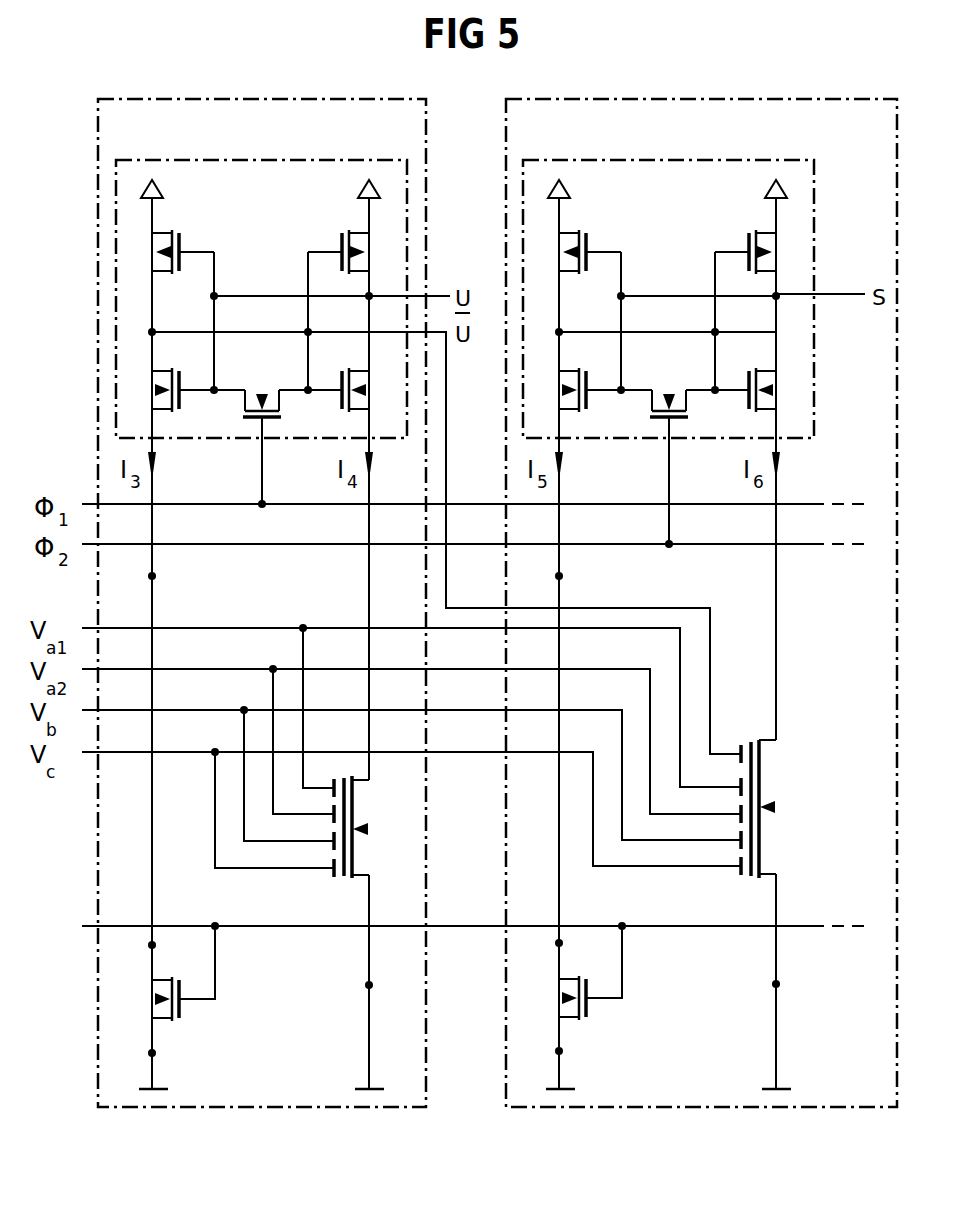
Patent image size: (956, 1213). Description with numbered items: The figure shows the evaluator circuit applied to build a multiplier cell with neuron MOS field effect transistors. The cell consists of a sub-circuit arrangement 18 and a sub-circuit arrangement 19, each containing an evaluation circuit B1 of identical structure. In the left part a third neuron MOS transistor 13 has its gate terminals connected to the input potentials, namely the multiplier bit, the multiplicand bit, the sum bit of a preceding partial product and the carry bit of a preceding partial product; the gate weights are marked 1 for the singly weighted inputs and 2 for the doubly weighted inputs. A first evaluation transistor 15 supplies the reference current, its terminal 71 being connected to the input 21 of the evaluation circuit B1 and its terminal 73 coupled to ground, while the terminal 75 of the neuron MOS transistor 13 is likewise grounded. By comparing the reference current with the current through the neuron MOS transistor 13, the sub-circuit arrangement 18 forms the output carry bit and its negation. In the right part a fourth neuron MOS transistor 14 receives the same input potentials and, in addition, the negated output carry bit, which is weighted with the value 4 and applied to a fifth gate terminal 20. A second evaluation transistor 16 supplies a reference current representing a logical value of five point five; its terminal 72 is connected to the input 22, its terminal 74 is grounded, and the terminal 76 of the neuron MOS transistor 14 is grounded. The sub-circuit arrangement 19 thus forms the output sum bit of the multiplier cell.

The sub-circuit arrangement 18 is at (198, 118).
The sub-circuit arrangement 19 is at (775, 118).
The first evaluation circuit B1 is at (280, 180).
The third neuron MOS transistor 13 is at (351, 844).
The fourth neuron MOS transistor 14 is at (756, 827).
The first evaluation transistor 15 is at (183, 1010).
The second evaluation transistor 16 is at (590, 1009).
The fifth gate terminal 20 is at (752, 732).
The input 21 is at (135, 578).
The input 22 is at (542, 578).
The terminal 71 is at (134, 946).
The terminal 72 is at (541, 944).
The terminal 73 is at (134, 1054).
The terminal 74 is at (541, 1052).
The terminal 75 is at (352, 986).
The terminal 76 is at (759, 985).
The gate input 1 is at (507, 725).
The gate input 2 is at (478, 793).
The gate input 4 is at (725, 741).